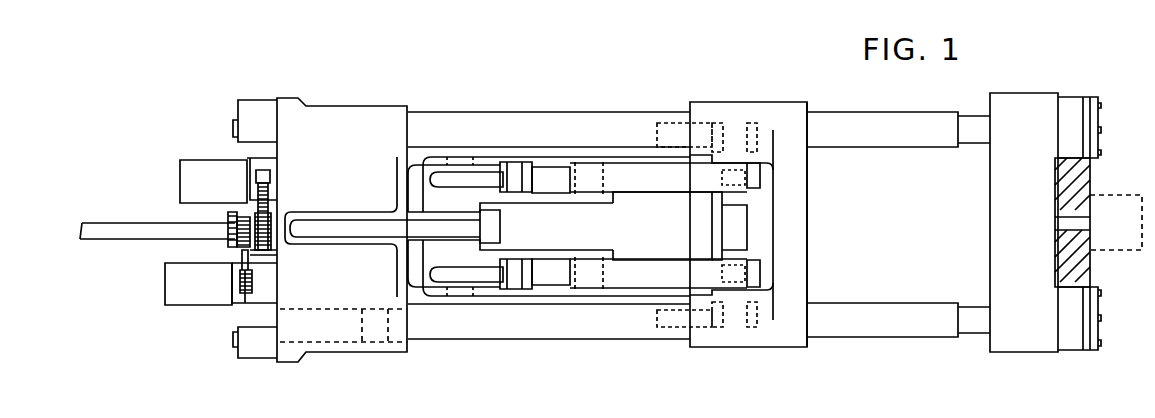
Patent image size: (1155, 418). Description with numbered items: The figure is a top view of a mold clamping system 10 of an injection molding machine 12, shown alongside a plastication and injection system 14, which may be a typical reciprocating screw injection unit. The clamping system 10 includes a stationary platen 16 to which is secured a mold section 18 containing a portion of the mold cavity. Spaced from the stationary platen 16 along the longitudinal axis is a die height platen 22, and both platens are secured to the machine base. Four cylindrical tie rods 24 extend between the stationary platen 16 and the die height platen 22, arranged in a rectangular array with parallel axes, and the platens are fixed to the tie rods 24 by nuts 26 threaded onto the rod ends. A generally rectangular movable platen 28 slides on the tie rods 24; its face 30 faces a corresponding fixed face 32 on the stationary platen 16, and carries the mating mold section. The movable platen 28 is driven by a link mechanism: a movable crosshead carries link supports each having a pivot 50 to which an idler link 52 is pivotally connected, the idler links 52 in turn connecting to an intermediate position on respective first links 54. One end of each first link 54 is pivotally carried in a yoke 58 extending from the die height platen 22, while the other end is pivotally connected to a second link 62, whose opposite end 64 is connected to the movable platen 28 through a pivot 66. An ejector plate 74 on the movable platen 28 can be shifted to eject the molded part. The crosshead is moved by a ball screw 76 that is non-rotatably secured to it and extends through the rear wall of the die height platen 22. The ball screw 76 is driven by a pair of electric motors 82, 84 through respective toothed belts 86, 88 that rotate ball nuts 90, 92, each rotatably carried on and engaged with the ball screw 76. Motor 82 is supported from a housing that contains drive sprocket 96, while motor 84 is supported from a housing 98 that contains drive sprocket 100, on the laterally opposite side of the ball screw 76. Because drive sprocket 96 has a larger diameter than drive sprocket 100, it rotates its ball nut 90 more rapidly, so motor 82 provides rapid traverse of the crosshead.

The mold clamping system 10 is at (395, 80).
The injection molding machine 12 is at (733, 59).
The plastication and injection system 14 is at (1112, 190).
The stationary platen 16 is at (1027, 100).
The mold section 18 is at (258, 303).
The die height platen 22 is at (342, 109).
The tie rods 24 is at (905, 118).
The nuts 26 is at (256, 98).
The movable platen 28 is at (710, 100).
The face 30 is at (808, 276).
The fixed face 32 is at (990, 268).
The pivot 50 is at (535, 175).
The idler link 52 is at (505, 172).
The first link 54 is at (558, 175).
The yoke 58 is at (432, 172).
The second link 62 is at (633, 172).
The opposite end 64 is at (760, 175).
The pivot 66 is at (742, 172).
The ejector plate 74 is at (736, 228).
The ball screw 76 is at (107, 240).
The electric motor 82 is at (175, 292).
The electric motor 84 is at (185, 177).
The toothed belt 86 is at (256, 262).
The toothed belt 88 is at (270, 198).
The ball nut 90 is at (230, 212).
The ball nut 92 is at (272, 215).
The drive sprocket 96 is at (248, 292).
The housing 98 is at (262, 160).
The drive sprocket 100 is at (268, 180).